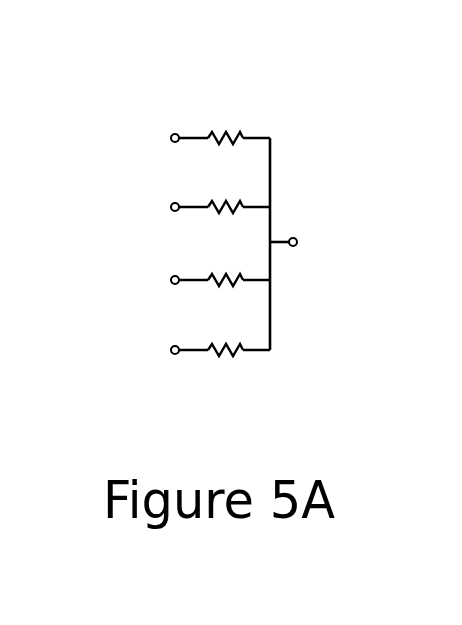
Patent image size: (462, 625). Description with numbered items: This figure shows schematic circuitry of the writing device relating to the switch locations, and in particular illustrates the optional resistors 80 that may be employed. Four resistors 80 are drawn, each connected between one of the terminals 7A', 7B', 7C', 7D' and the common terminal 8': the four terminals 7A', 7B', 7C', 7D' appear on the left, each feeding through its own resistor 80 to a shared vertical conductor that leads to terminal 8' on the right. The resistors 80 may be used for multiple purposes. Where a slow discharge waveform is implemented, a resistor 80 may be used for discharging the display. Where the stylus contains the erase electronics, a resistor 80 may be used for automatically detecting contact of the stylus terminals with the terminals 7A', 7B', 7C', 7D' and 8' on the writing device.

The resistors 80 is at (227, 343).
The terminal 8' is at (297, 237).
The terminal 7A' is at (192, 137).
The terminal 7B' is at (192, 206).
The terminal 7C' is at (192, 279).
The terminal 7D' is at (192, 349).